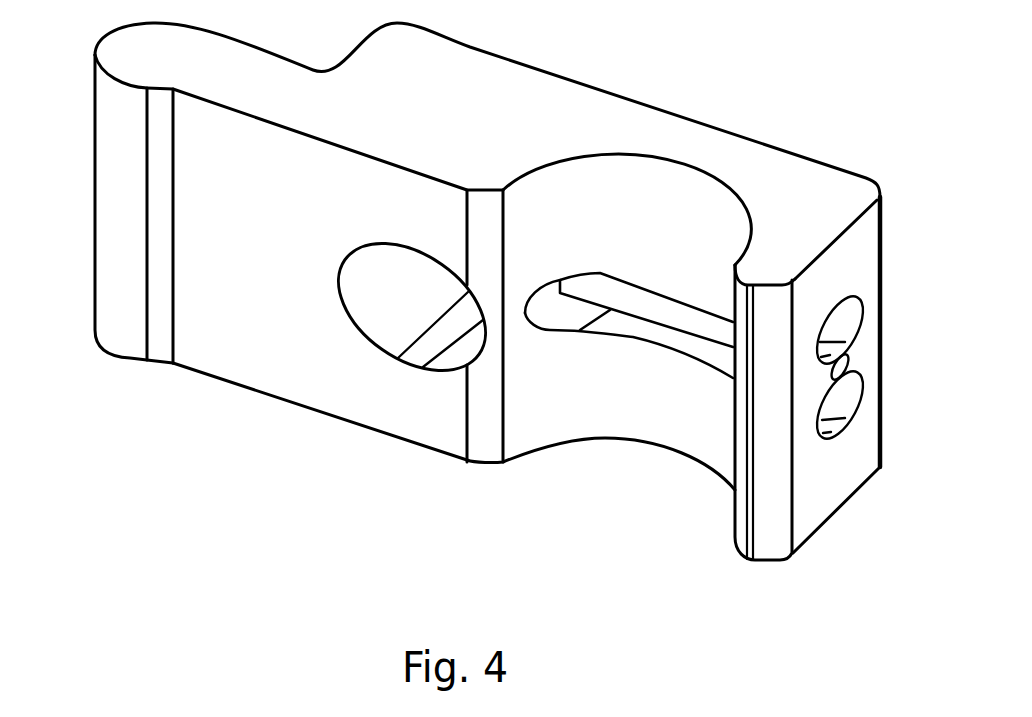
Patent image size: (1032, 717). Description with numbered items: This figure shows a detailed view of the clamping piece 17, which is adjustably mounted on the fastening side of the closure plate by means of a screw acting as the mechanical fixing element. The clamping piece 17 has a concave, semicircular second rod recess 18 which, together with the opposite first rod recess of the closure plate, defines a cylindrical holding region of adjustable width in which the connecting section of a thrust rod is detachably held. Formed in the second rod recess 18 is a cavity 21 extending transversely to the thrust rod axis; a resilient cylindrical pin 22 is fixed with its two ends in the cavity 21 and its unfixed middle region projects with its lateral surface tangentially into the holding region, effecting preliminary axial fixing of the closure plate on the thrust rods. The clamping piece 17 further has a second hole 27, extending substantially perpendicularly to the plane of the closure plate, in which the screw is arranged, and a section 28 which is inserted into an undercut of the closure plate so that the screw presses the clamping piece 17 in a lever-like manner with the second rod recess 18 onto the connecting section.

The clamping piece 17 is at (417, 402).
The second rod recess 18 is at (650, 178).
The cavity 21 is at (613, 320).
The resilient cylindrical pin 22 is at (677, 313).
The second hole 27 is at (377, 313).
The section 28 is at (125, 295).